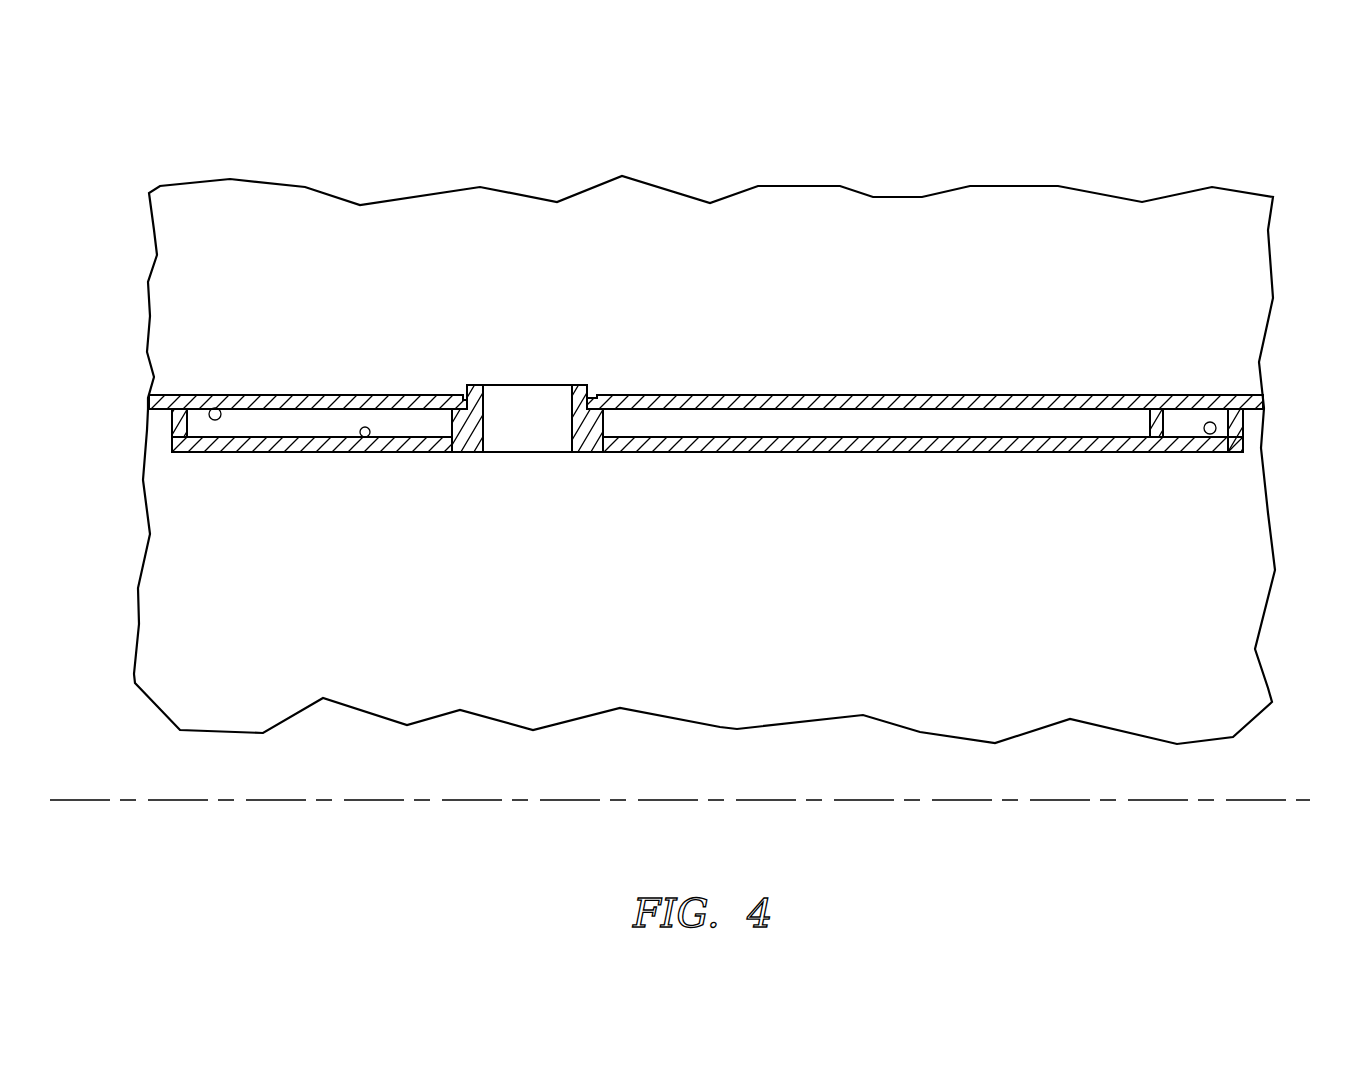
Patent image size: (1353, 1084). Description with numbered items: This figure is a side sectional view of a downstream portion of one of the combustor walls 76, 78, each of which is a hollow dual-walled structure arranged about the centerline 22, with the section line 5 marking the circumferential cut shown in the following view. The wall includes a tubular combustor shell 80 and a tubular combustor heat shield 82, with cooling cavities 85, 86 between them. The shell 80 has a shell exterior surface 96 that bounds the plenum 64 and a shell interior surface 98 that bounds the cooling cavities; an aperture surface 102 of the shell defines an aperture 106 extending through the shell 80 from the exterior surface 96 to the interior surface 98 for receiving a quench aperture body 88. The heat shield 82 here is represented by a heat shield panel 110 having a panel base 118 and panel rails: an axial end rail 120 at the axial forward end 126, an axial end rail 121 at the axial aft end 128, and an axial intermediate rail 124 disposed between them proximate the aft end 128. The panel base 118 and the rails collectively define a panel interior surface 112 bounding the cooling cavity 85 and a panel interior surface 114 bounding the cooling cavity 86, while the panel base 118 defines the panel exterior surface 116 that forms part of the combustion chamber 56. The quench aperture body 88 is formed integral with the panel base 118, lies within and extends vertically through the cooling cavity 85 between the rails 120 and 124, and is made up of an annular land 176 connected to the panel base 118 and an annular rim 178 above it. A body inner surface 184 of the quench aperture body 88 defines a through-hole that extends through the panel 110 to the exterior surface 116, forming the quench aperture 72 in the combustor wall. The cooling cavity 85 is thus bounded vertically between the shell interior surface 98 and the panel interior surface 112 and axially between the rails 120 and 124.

The section line 5- 5 is at (138, 409).
The centerline 22 is at (1222, 802).
The combustion chamber 56 is at (702, 670).
The plenum 64 is at (737, 259).
The quench aperture 72 is at (530, 393).
The inner combustor wall 76 is at (701, 483).
The outer combustor wall 78 is at (701, 483).
The combustor shell 80 is at (818, 392).
The combustor heat shield 82 is at (707, 495).
The cooling cavity 85 is at (312, 438).
The cooling cavity 86 is at (1195, 425).
The quench aperture body 88 is at (586, 412).
The shell exterior surface 96 is at (237, 395).
The shell interior surface 98 is at (212, 408).
The aperture surface 102 is at (465, 396).
The aperture 106 is at (596, 398).
The heat shield panel 110 is at (797, 462).
The panel interior surface 112 is at (365, 437).
The panel interior surface 114 is at (1205, 440).
The panel exterior surface 116 is at (384, 453).
The panel base 118 is at (695, 440).
The axial end rail 120 is at (133, 469).
The axial end rail 121 is at (1290, 477).
The axial intermediate rail 124 is at (1148, 418).
The axial forward end 126 is at (172, 427).
The axial aft end 128 is at (1236, 424).
The annular land 176 is at (478, 385).
The annular rim 178 is at (465, 409).
The body inner surface 184 is at (585, 380).